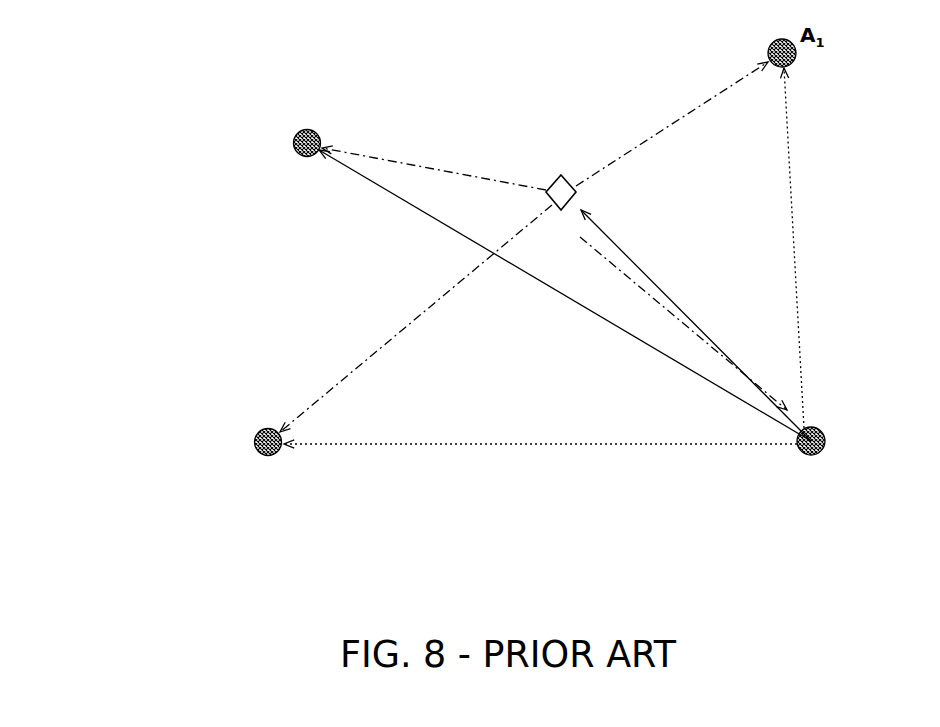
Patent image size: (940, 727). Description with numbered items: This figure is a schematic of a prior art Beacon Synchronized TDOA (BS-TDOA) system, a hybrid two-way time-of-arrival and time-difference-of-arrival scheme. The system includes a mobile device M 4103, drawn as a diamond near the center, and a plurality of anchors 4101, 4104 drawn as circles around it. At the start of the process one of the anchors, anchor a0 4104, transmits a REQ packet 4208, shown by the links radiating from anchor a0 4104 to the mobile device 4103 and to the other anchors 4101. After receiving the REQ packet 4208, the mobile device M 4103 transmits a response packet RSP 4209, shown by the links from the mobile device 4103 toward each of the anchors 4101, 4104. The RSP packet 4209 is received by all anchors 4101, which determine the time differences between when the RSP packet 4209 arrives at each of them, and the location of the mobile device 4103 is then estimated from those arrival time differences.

The anchors 4101 is at (296, 152).
The mobile device M 4103 is at (560, 156).
The anchor a0 4104 is at (803, 456).
The REQ packet 4208 is at (398, 206).
The RSP packet 4209 is at (427, 163).